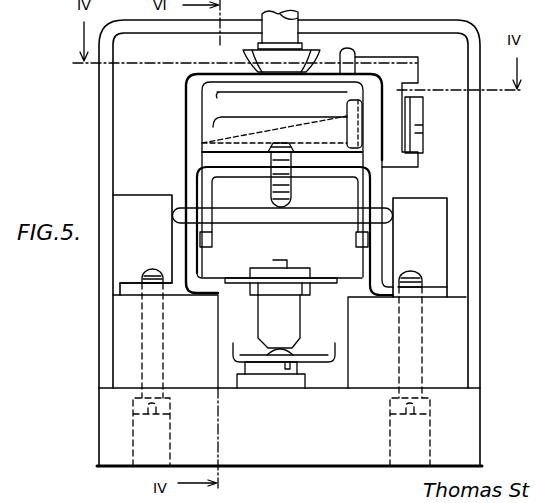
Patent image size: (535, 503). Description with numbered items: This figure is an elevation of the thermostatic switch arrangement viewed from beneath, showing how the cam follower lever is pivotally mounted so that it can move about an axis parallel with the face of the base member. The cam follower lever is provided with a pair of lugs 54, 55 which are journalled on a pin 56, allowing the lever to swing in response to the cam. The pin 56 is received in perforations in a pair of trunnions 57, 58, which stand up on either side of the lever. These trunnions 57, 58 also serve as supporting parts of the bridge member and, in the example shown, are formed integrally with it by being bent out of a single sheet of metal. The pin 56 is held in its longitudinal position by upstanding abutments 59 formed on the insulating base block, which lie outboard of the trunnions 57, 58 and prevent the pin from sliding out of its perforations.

The lug 54 is at (211, 236).
The lug 55 is at (355, 238).
The pin 56 is at (276, 214).
The trunnion 57 is at (188, 262).
The trunnion 58 is at (375, 265).
The upstanding abutment 59 is at (147, 188).